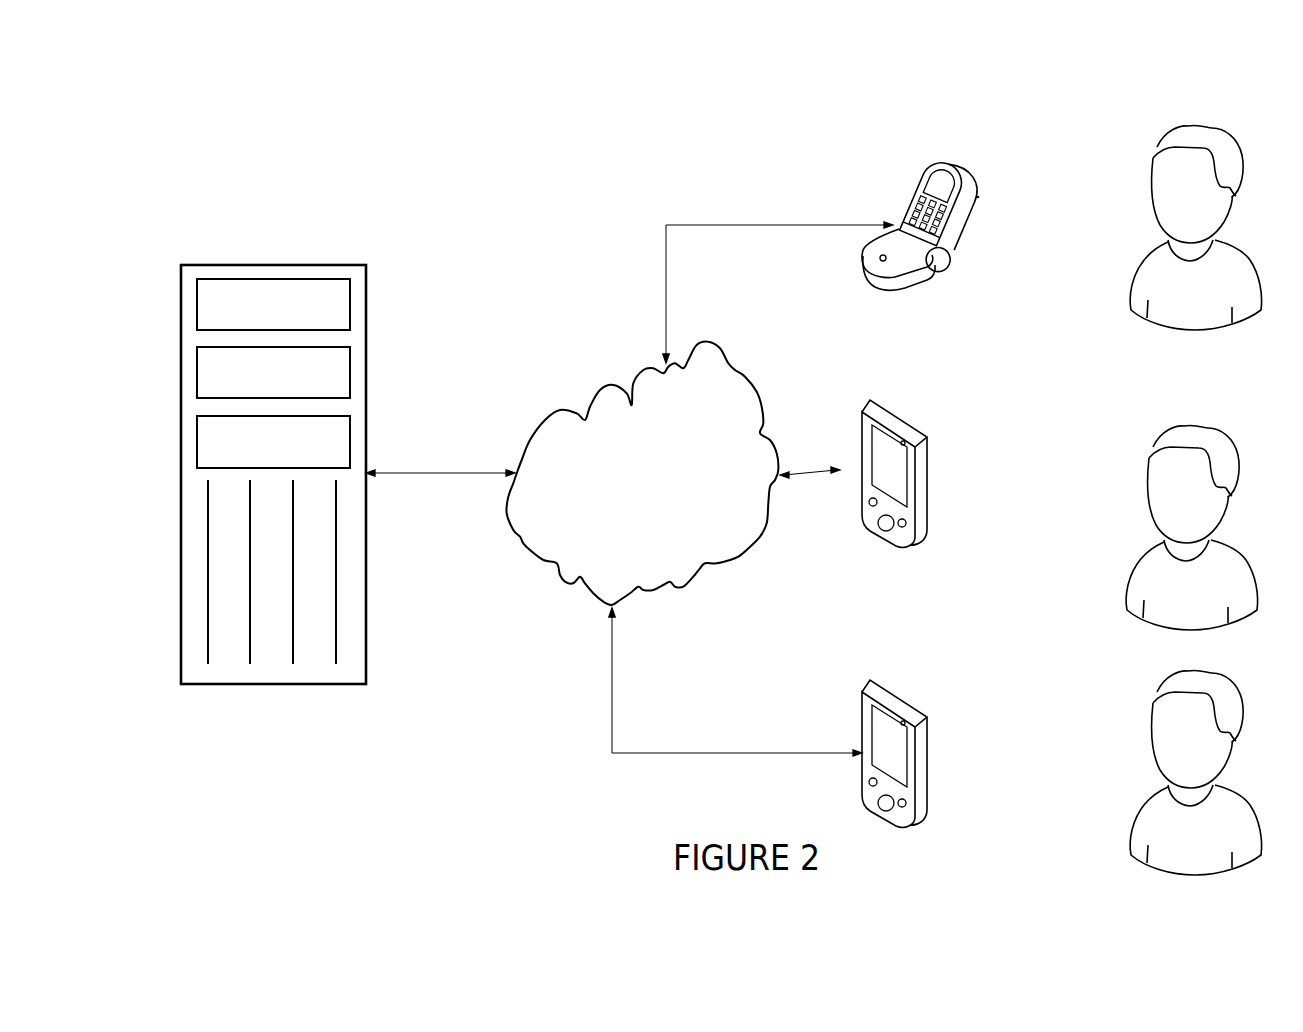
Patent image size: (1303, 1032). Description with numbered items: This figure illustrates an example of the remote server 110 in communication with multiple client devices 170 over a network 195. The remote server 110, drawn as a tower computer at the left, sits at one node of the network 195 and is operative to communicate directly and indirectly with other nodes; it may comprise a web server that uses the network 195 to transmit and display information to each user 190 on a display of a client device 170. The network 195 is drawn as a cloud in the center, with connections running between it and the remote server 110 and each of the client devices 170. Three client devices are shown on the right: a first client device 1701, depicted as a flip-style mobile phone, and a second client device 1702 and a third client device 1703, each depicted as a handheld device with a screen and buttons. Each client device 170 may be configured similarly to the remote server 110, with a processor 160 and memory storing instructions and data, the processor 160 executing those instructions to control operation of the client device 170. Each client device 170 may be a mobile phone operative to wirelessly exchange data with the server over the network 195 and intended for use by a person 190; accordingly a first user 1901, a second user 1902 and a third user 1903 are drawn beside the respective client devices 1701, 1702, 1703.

The remote server 110 is at (229, 263).
The network 195 is at (642, 474).
The processor 160 is at (978, 197).
The client device 170 is at (905, 468).
The first client device 1701 is at (937, 153).
The second client device 1702 is at (907, 413).
The third client device 1703 is at (905, 692).
The user 190 is at (1172, 472).
The first user 1901 is at (1175, 122).
The second user 1902 is at (1163, 425).
The third user 1903 is at (1162, 675).